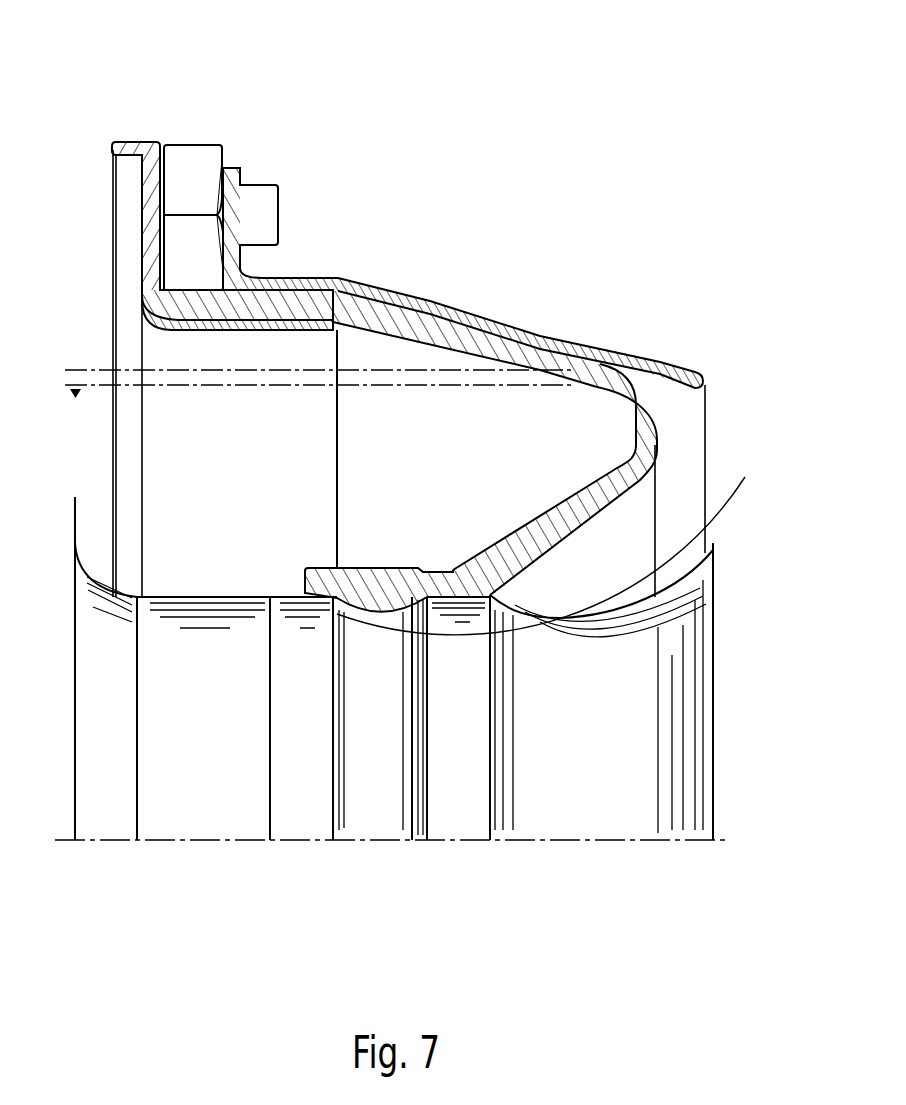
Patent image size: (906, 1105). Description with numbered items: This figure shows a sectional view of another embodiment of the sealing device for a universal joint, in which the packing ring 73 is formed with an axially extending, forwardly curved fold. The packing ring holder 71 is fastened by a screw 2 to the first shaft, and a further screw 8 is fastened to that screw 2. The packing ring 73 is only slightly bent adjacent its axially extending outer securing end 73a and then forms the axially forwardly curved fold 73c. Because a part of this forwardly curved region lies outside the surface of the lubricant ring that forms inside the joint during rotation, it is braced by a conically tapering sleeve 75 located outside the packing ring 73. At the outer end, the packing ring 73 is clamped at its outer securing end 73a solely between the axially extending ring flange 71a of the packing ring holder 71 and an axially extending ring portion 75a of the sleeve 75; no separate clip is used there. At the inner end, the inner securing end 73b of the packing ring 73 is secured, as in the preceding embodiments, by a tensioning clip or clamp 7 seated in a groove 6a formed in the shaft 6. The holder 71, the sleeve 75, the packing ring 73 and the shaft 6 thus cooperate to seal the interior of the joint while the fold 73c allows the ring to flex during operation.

The packing ring holder 71 is at (130, 142).
The axially extending ring flange 71a is at (273, 326).
The screw 2 is at (201, 155).
The screw 8 is at (269, 195).
The axially extending ring portion 75a is at (293, 278).
The outer securing end 73a is at (300, 290).
The packing ring 73 is at (395, 305).
The axially forwardly curved fold 73c is at (625, 377).
The inner securing end 73b is at (303, 612).
The conically tapering sleeve 75 is at (472, 313).
The tensioning clip or clamp 7 is at (383, 565).
The shaft 6 is at (337, 567).
The groove 6a is at (557, 536).